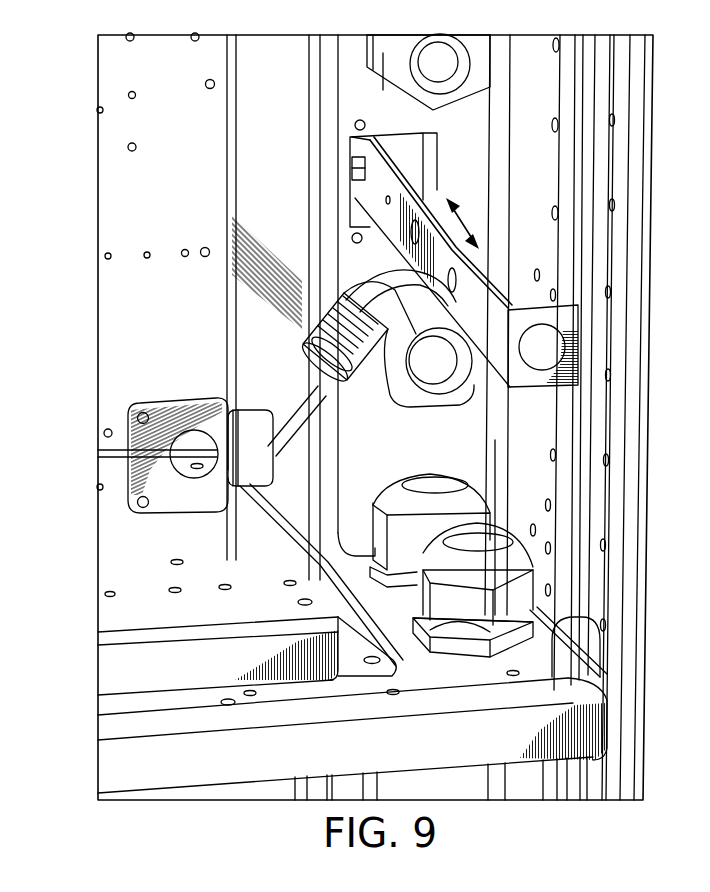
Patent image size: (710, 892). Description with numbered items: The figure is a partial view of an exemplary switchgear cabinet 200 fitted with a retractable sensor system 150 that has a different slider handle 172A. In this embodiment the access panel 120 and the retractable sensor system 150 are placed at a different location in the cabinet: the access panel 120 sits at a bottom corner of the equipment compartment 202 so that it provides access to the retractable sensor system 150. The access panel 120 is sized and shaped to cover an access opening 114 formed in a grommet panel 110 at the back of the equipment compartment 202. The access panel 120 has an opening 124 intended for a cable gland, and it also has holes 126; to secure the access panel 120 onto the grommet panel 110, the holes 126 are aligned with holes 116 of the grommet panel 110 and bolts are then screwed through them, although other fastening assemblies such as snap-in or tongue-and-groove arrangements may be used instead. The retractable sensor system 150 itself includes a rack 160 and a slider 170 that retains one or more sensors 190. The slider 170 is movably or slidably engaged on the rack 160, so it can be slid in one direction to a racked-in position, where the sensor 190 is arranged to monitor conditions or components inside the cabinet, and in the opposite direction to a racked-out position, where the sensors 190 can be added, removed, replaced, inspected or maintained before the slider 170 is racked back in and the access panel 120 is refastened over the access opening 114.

The switchgear cabinet 200 is at (74, 150).
The grommet panel 110 is at (267, 128).
The access opening 114 is at (447, 198).
The holes of the grommet panel 116 is at (354, 122).
The access panel 120 is at (180, 410).
The opening 124 is at (200, 486).
The holes 126 is at (145, 508).
The retractable sensor system 150 is at (345, 133).
The rack 160 is at (407, 135).
The slider 170 is at (482, 338).
The slider handle 172A is at (523, 382).
The sensor 190 is at (403, 153).
The equipment compartment 202 is at (440, 680).